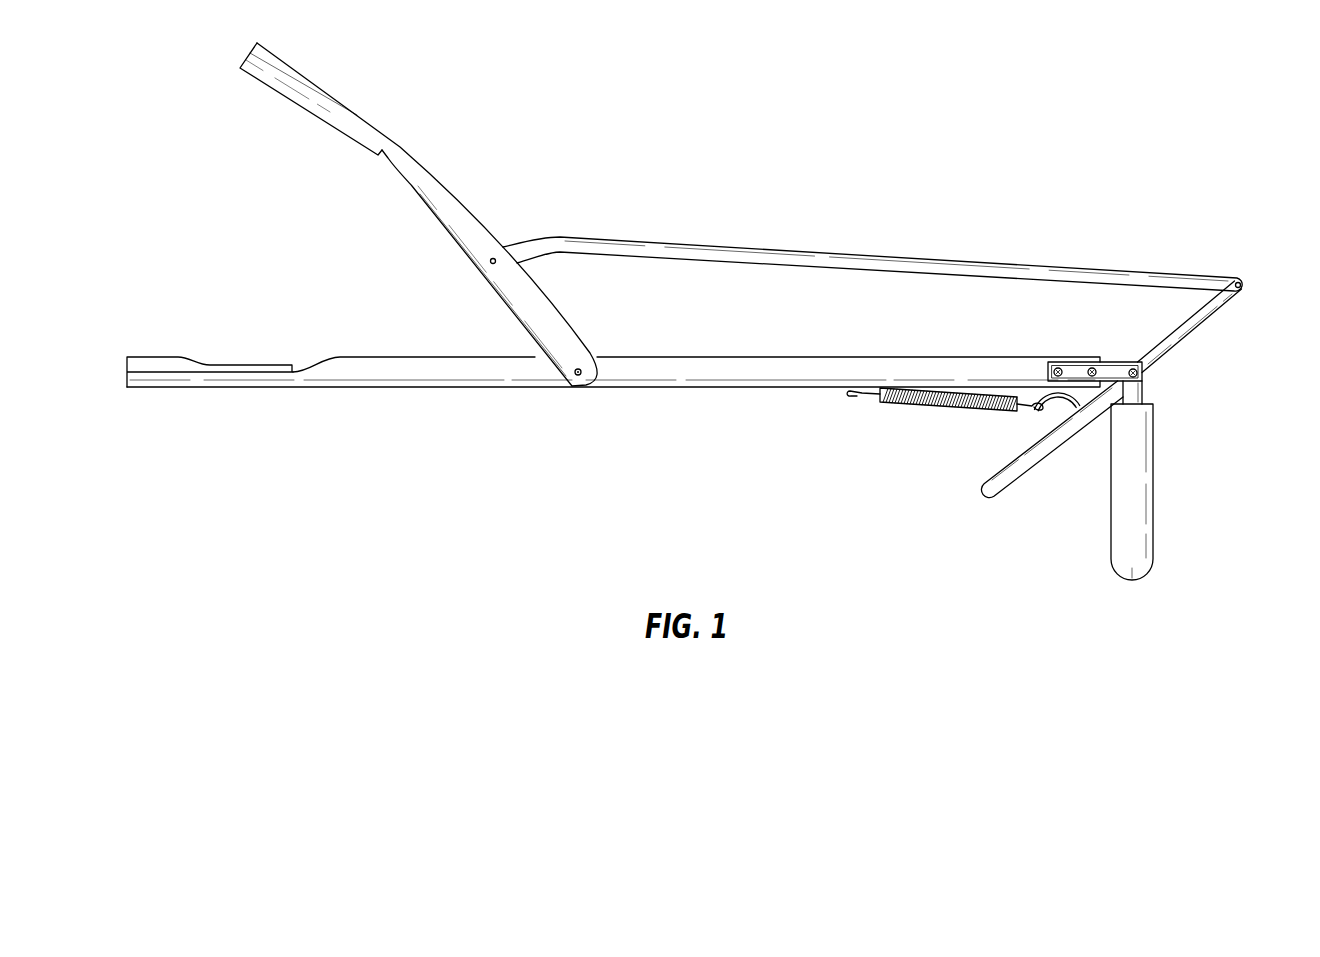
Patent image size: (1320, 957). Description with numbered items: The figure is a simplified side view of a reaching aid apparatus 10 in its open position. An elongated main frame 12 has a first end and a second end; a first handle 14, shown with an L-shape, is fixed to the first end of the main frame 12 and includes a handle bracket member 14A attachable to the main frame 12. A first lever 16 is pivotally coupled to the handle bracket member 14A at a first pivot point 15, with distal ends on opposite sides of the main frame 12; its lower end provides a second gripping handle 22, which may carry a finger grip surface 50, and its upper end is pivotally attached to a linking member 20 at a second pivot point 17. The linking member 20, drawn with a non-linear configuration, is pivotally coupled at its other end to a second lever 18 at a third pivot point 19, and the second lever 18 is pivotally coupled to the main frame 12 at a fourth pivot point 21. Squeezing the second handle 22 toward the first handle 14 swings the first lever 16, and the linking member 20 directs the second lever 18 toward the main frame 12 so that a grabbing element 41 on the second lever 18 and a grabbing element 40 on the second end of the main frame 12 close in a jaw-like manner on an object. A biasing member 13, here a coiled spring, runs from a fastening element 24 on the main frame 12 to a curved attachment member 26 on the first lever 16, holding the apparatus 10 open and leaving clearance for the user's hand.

The reaching aid apparatus 10 is at (1176, 86).
The main frame 12 is at (678, 388).
The biasing member 13 is at (943, 406).
The first handle 14 is at (1156, 480).
The handle bracket member 14A is at (1118, 361).
The first pivot point 15 is at (1139, 374).
The first lever 16 is at (1190, 338).
The second pivot point 17 is at (1236, 281).
The second lever 18 is at (478, 207).
The third pivot point 19 is at (490, 262).
The linking member 20 is at (836, 253).
The fourth pivot point 21 is at (579, 376).
The second gripping handle 22 is at (1047, 458).
The fastening element 24 is at (852, 398).
The attachment member 26 is at (1046, 393).
The grabbing element 40 is at (152, 356).
The grabbing element 41 is at (250, 78).
The finger grip surface 50 is at (1028, 448).